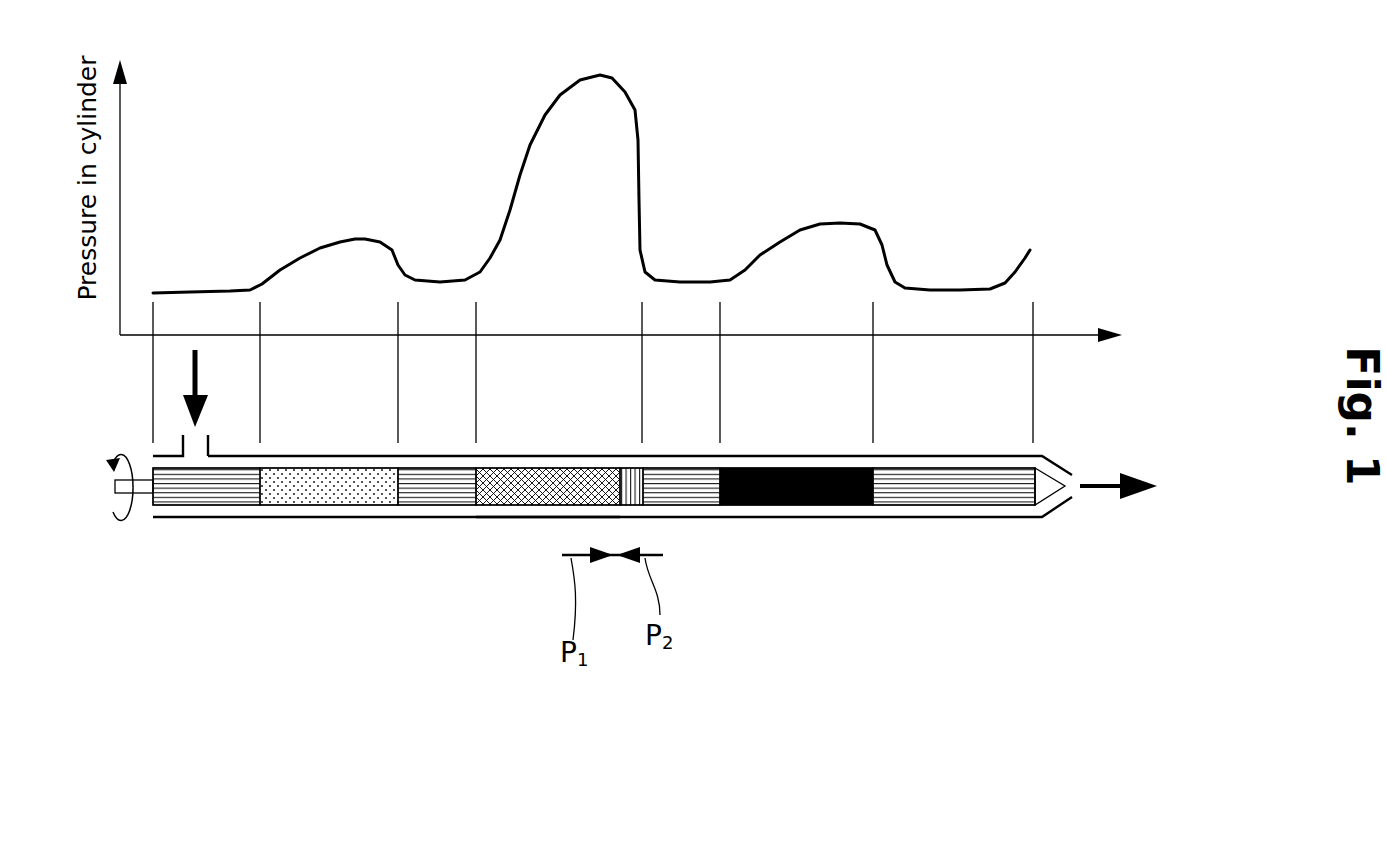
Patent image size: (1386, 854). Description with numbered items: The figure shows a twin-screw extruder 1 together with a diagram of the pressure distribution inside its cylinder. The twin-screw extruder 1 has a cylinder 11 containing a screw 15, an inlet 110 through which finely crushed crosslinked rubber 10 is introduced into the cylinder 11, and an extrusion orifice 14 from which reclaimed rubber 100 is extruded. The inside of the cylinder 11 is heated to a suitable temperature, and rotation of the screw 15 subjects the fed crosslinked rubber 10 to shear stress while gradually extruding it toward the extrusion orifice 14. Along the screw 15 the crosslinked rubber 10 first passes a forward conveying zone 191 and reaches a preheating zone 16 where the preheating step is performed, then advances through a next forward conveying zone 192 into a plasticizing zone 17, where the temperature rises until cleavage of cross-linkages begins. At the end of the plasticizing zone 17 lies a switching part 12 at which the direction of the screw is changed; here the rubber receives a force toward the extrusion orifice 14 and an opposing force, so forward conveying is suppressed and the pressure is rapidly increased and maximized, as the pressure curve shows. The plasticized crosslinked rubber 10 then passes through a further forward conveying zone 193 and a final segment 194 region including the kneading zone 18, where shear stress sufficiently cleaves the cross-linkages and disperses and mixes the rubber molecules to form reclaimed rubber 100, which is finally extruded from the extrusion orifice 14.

The twin-screw extruder 1 is at (336, 685).
The crosslinked rubber 10 is at (198, 378).
The cylinder 11 is at (521, 528).
The switching part 12 is at (638, 467).
The extrusion orifice 14 is at (1058, 512).
The screw 15 is at (182, 518).
The preheating zone 16 is at (327, 507).
The plasticizing zone 17 is at (525, 467).
The kneading zone 18 is at (825, 507).
The reclaimed rubber 100 is at (1113, 500).
The inlet 110 is at (180, 450).
The forward conveying zone 191 is at (237, 508).
The forward conveying zone 192 is at (437, 507).
The forward conveying zone 193 is at (709, 508).
The screw segment 194 is at (943, 507).